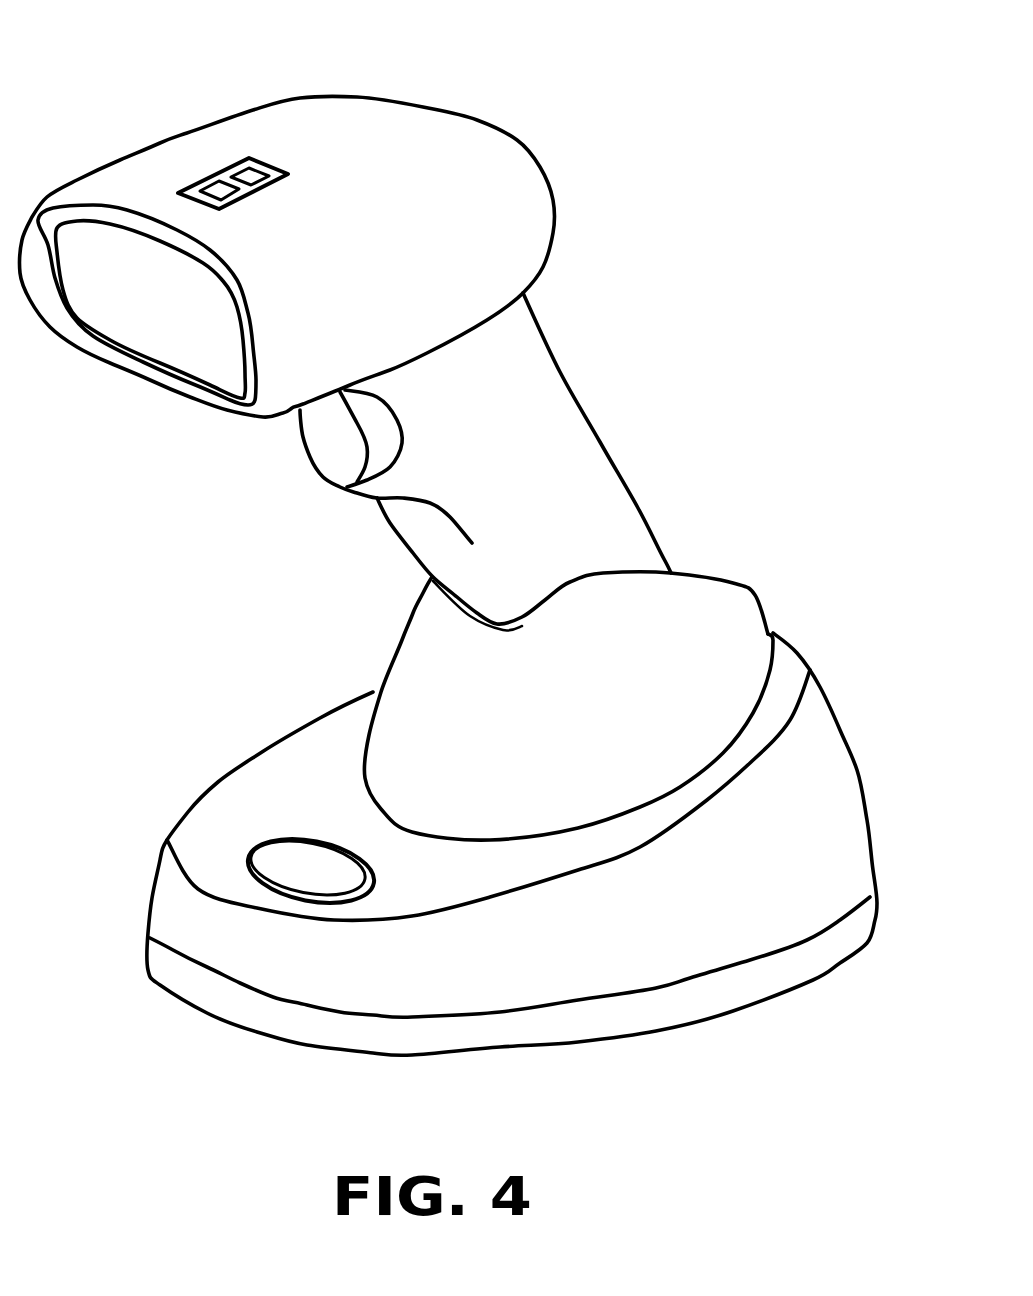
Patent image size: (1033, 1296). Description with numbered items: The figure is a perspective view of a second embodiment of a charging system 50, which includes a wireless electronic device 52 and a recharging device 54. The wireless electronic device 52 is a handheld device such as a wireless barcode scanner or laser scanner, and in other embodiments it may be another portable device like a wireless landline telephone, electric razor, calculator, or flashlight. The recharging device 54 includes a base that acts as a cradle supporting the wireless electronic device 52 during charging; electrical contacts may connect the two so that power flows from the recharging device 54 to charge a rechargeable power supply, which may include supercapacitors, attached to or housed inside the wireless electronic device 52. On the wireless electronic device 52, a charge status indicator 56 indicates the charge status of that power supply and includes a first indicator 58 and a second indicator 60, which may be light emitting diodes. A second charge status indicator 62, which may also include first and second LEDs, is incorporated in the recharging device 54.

The charging system 50 is at (704, 275).
The wireless electronic device 52 is at (460, 103).
The recharging device 54 is at (294, 729).
The charge status indicator 56 is at (263, 192).
The first indicator 58 is at (235, 165).
The second indicator 60 is at (203, 185).
The second charge status indicator 62 is at (310, 867).